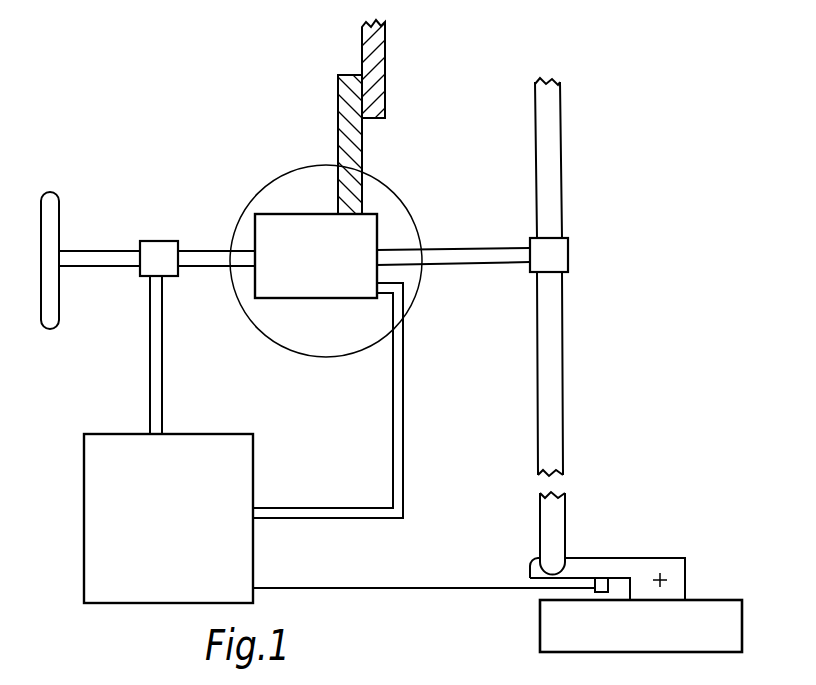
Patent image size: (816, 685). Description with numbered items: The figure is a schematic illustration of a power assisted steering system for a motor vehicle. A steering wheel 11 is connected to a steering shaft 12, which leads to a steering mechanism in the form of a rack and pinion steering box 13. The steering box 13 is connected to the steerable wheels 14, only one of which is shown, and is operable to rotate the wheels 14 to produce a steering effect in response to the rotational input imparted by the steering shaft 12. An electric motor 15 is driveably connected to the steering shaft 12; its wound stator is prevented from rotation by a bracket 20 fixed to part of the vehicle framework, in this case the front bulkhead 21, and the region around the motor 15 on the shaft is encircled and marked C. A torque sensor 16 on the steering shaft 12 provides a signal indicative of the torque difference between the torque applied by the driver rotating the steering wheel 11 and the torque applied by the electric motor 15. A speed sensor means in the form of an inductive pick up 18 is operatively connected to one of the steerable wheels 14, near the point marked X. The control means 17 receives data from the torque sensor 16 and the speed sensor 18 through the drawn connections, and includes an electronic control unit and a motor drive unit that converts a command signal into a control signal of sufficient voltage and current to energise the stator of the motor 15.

The steering wheel 11 is at (50, 200).
The steering shaft 12 is at (99, 250).
The rack and pinion steering box 13 is at (530, 240).
The steerable wheel 14 is at (540, 622).
The electric motor 15 is at (317, 233).
The torque sensor 16 is at (163, 240).
The control means 17 is at (100, 438).
The inductive pick up 18 is at (612, 583).
The bracket 20 is at (338, 97).
The front bulkhead 21 is at (385, 53).
The clutch region C is at (267, 187).
The plate X is at (664, 575).